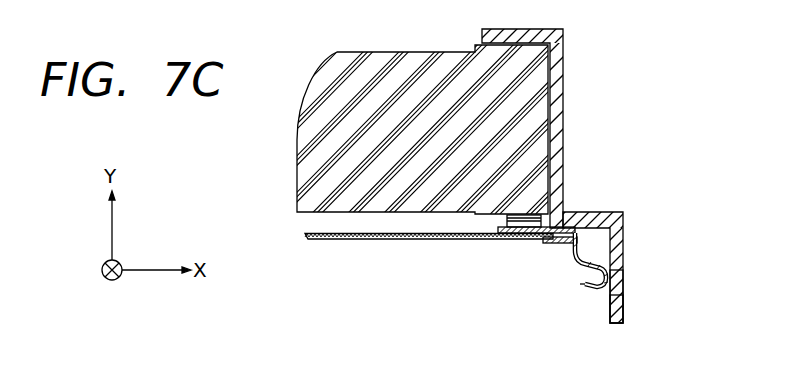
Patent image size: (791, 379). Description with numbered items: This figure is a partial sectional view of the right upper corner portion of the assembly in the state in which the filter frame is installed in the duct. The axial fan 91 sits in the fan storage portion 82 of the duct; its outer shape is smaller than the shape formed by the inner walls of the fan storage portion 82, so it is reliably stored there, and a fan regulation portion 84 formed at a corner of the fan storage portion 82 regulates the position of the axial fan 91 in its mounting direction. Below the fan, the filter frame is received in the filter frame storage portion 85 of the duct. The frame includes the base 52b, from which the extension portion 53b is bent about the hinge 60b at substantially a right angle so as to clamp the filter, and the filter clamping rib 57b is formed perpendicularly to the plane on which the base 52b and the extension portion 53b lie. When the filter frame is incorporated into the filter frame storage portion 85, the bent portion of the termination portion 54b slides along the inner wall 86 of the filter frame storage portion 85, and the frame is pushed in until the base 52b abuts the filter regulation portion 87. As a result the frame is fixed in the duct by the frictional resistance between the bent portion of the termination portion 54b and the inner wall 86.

The axial fan 91 is at (538, 104).
The fan regulation portion 84 is at (520, 44).
The filter regulation portion 87 is at (612, 224).
The termination portion 54b is at (612, 288).
The inner wall 86 is at (607, 310).
The base 52b is at (503, 237).
The filter clamping rib 57b is at (548, 241).
The filter frame storage portion 85 is at (420, 258).
The fan storage portion 82 is at (391, 221).
The hinge 60b is at (606, 250).
The extension portion 53b is at (571, 252).